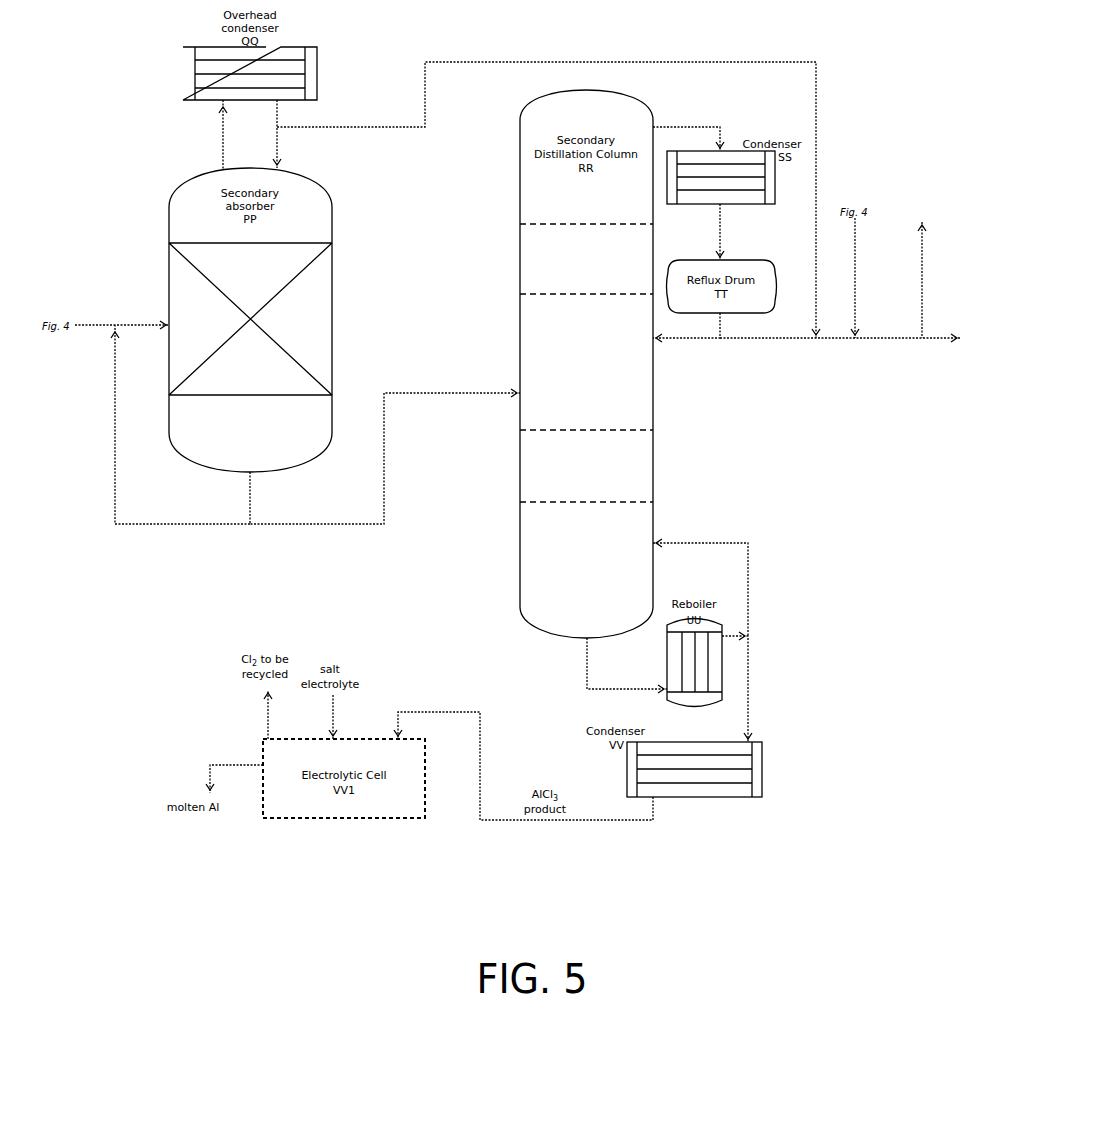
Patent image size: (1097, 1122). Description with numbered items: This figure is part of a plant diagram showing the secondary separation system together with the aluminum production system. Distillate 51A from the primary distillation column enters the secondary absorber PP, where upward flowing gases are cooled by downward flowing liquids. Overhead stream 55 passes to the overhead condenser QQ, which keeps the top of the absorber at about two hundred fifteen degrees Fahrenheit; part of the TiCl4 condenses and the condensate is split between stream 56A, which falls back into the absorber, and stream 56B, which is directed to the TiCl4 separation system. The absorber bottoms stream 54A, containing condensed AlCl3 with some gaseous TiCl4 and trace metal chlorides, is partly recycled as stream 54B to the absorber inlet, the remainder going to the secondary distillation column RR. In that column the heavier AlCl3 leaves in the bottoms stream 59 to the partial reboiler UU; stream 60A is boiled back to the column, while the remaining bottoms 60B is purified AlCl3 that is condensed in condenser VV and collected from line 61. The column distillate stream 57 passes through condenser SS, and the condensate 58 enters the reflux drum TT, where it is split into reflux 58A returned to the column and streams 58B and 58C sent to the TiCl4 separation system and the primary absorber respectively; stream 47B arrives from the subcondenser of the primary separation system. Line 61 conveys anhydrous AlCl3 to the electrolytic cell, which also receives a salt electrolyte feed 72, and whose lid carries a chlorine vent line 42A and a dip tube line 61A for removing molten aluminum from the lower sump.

The overhead stream 55 is at (212, 135).
The condensate return stream 56A is at (291, 134).
The condensate stream to TiCl4 separation system 56B is at (548, 186).
The distillate inlet stream 51A is at (122, 315).
The bottoms stream of secondary absorber 54A is at (385, 456).
The heavy stream recycle 54B is at (180, 424).
The distillate stream 57 is at (688, 131).
The condensate 58 is at (729, 232).
The reflux recycle stream 58A is at (686, 335).
The condensate stream to TiCl4 separation system 58B is at (840, 345).
The condensate stream to primary absorber 58C is at (932, 280).
The stream from subcondenser 47B is at (868, 278).
The reboiler vapor return stream 60A is at (700, 580).
The purified AlCl3 bottoms stream 60B is at (751, 687).
The bottoms stream 59 is at (627, 672).
The AlCl3 product line 61 is at (523, 766).
The dip tube line 61A is at (234, 768).
The chlorine vent line 42A is at (253, 714).
The salt electrolyte feed stream 72 is at (326, 717).